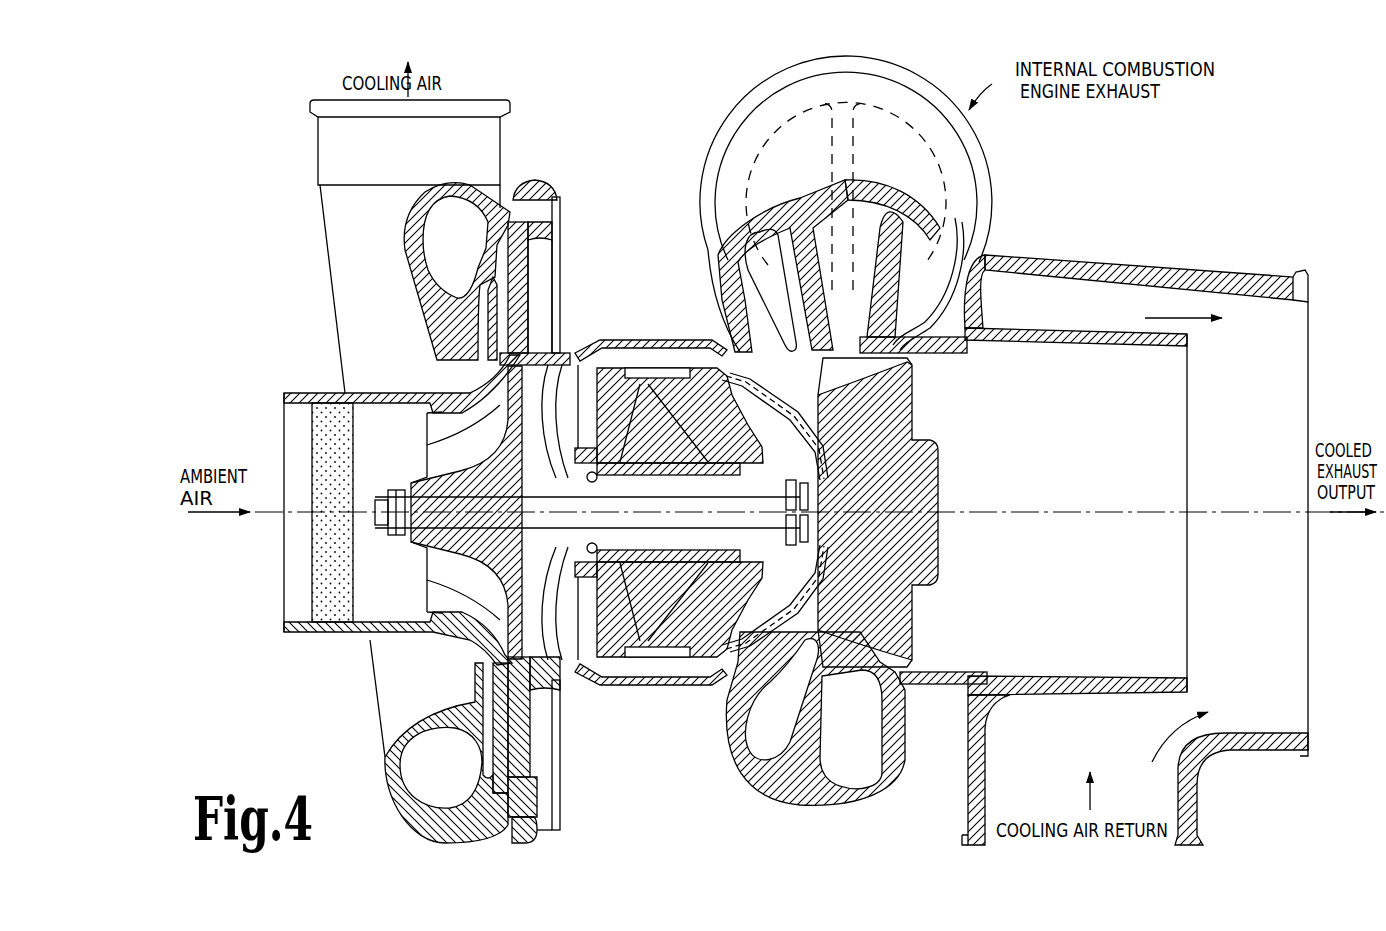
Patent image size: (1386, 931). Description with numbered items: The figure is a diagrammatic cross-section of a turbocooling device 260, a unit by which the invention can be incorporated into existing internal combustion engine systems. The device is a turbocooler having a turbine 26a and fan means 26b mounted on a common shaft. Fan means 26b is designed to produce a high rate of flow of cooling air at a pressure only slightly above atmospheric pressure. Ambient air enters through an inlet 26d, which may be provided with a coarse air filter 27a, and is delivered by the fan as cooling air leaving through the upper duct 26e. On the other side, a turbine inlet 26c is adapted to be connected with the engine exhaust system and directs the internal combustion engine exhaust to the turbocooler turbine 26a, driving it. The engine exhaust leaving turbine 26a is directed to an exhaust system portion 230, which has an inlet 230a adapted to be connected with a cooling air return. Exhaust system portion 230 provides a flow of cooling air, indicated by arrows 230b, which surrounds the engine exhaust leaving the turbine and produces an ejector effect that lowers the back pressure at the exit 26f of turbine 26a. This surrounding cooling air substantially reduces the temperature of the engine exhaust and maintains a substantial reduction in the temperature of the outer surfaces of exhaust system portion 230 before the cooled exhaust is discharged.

The turbine 26a is at (930, 627).
The fan means 26b is at (413, 458).
The turbine inlet 26c is at (1012, 190).
The inlet 26d is at (338, 633).
The cooling air outlet duct 26e is at (482, 100).
The exit of turbocooler turbine 26f is at (1187, 406).
The coarse air filter 27a is at (322, 448).
The exhaust system portion 230 is at (1135, 529).
The inlet of exhaust system portion 230a is at (1204, 836).
The arrows indicating flow of cooling air 230b is at (1176, 312).
The turbocooling device 260 is at (1135, 491).